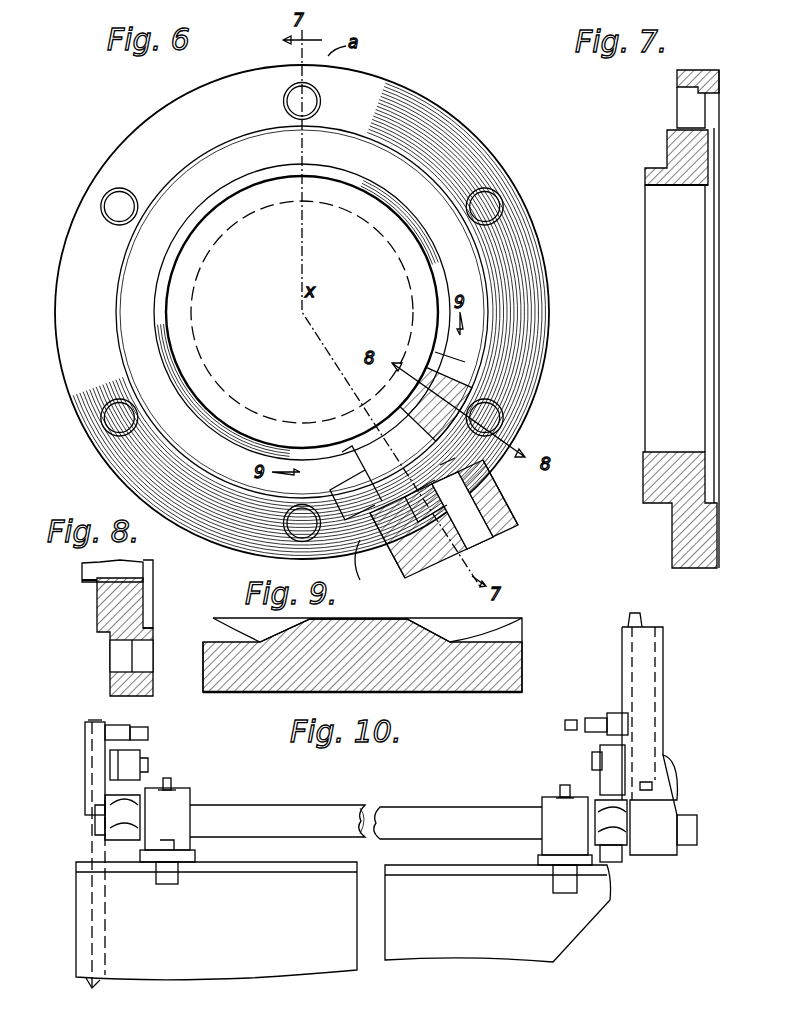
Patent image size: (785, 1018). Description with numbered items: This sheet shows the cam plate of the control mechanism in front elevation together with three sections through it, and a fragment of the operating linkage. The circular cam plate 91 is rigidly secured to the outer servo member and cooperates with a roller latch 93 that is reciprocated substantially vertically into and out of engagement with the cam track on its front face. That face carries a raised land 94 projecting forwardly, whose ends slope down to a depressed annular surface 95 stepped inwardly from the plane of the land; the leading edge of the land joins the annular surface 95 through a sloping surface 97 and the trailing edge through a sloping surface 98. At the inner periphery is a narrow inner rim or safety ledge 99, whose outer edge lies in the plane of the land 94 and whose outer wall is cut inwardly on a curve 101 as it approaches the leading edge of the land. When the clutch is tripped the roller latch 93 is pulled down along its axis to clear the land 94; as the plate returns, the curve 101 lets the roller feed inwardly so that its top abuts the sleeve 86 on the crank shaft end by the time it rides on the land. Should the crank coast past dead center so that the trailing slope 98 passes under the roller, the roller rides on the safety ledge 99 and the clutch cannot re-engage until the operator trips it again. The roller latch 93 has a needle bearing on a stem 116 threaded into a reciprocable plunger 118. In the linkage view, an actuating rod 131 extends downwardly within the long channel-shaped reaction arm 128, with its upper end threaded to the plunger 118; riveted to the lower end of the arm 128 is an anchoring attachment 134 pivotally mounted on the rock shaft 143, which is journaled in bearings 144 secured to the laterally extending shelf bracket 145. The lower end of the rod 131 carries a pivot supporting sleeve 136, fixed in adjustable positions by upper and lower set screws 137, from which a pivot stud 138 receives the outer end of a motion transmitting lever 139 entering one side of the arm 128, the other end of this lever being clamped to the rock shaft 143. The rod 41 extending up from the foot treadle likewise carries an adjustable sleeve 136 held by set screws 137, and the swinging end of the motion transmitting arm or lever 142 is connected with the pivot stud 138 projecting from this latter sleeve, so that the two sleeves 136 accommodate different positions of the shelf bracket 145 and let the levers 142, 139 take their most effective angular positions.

In FIG. 6, the cam plate 91 is at (66, 255).
In FIG. 7, the cam plate 91 is at (650, 366).
In FIG. 6, the depressed annular surface 95 is at (412, 182).
In FIG. 7, the depressed annular surface 95 is at (666, 145).
In FIG. 9, the depressed annular surface 95 is at (522, 618).
In FIG. 6, the inner rim or safety ledge 99 is at (165, 361).
In FIG. 7, the inner rim or safety ledge 99 is at (644, 180).
In FIG. 8, the inner rim or safety ledge 99 is at (82, 582).
In FIG. 6, the sleeve 86 is at (283, 420).
In FIG. 6, the leading sloping surface 97 is at (430, 378).
In FIG. 8, the leading sloping surface 97 is at (96, 626).
In FIG. 9, the leading sloping surface 97 is at (457, 632).
In FIG. 6, the inwardly cut curve 101 is at (446, 355).
In FIG. 8, the inwardly cut curve 101 is at (92, 585).
In FIG. 6, the raised land 94 is at (392, 414).
In FIG. 7, the raised land 94 is at (642, 472).
In FIG. 9, the raised land 94 is at (380, 619).
In FIG. 6, the trailing sloping surface 98 is at (365, 413).
In FIG. 9, the trailing sloping surface 98 is at (255, 628).
In FIG. 6, the reciprocable plunger 118 is at (497, 507).
In FIG. 6, the roller latch 93 is at (356, 550).
In FIG. 6, the stem 116 is at (392, 586).
In FIG. 10, the rod 41 is at (80, 986).
In FIG. 10, the pivot supporting sleeve 136 is at (86, 769).
In FIG. 10, the set screws 137 is at (140, 730).
In FIG. 10, the pivot stud 138 is at (140, 756).
In FIG. 10, the clamp 142 is at (140, 776).
In FIG. 10, the support bracket 144 is at (186, 792).
In FIG. 10, the rod 143 is at (347, 806).
In FIG. 10, the plate 145 is at (301, 958).
In FIG. 10, the channel-shaped reaction arm 128 is at (663, 676).
In FIG. 10, the actuating rod 131 is at (643, 620).
In FIG. 10, the motion transmitting lever 139 is at (600, 756).
In FIG. 10, the anchoring attachment 134 is at (680, 800).